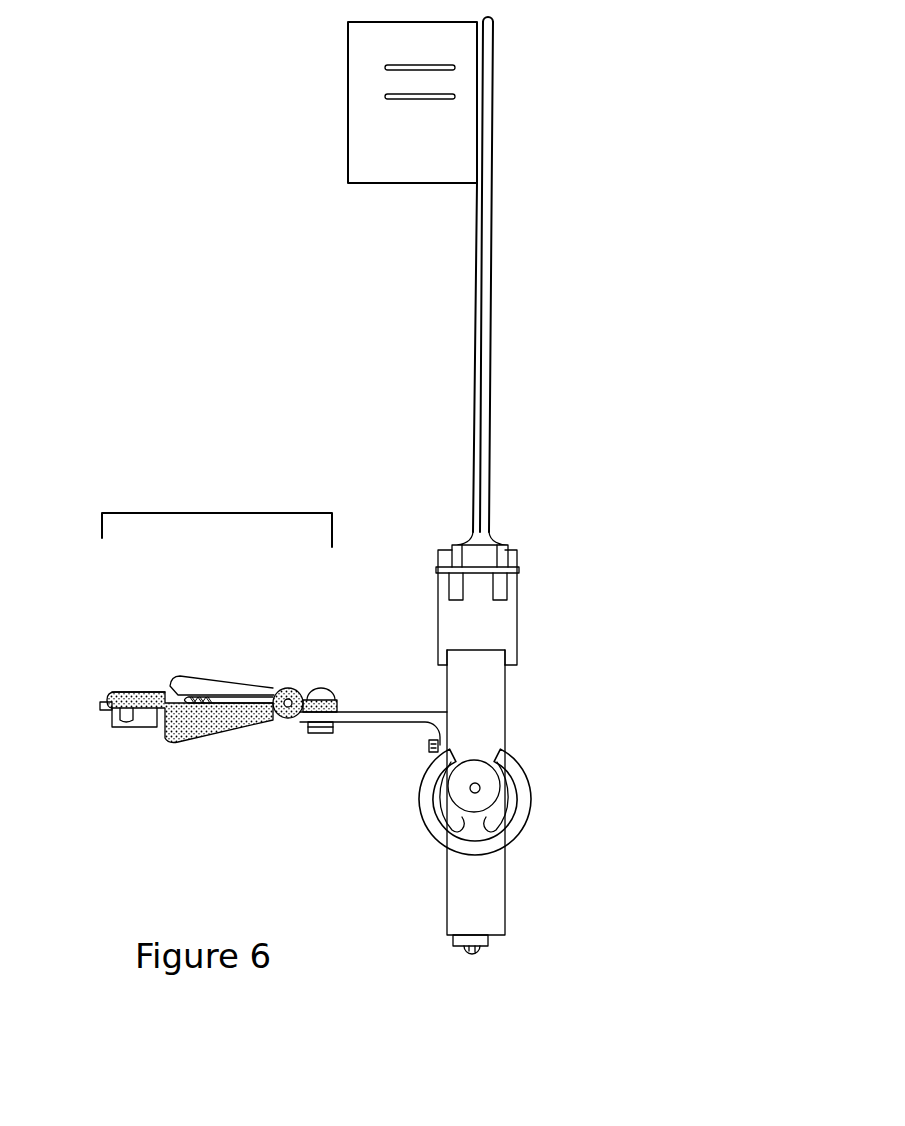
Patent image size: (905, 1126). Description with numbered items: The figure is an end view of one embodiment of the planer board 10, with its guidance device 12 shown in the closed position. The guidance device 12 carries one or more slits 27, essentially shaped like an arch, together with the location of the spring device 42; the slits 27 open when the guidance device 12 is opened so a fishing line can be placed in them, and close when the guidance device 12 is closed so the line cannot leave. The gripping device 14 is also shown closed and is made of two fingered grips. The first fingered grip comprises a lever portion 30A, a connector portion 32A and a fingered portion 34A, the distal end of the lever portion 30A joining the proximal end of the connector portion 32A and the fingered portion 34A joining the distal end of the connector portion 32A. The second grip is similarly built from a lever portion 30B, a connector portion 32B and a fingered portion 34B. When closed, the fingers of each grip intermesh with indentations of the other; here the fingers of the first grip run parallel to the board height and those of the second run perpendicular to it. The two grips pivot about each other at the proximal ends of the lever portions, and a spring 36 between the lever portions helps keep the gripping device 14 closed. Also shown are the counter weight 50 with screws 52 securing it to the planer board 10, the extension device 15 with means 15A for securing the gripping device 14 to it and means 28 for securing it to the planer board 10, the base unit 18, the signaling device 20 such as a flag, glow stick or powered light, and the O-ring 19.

The planer board 10 is at (480, 692).
The guidance device 12 is at (525, 795).
The gripping device 14 is at (216, 513).
The extension device 15 is at (385, 712).
The means for securing the gripping device to the extension device 15A is at (324, 695).
The base unit 18 is at (507, 625).
The O-ring 19 is at (519, 572).
The signaling device 20 is at (489, 462).
The slits 27 is at (510, 800).
The means for securing the extension device to the planer board 28 is at (430, 746).
The lever portion 30A is at (262, 712).
The lever portion 30B is at (252, 685).
The connector portion 32A is at (170, 745).
The connector portion 32B is at (175, 680).
The fingered portion 34A is at (120, 727).
The fingered portion 34B is at (112, 692).
The spring 36 is at (208, 707).
The spring device 42 is at (478, 787).
The counter weight 50 is at (490, 944).
The screws 52 is at (477, 952).